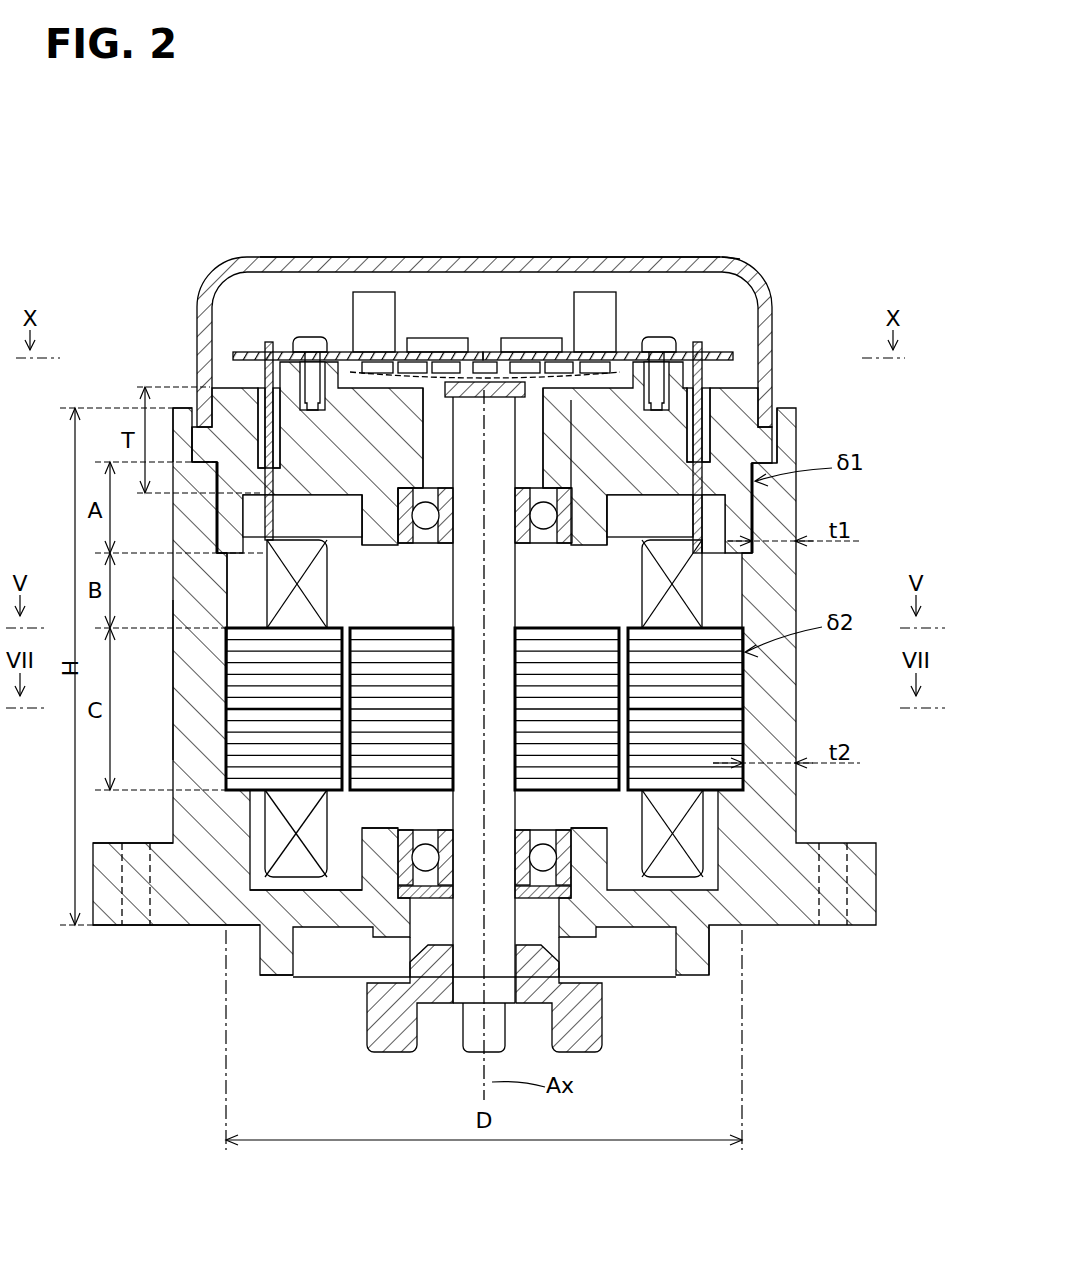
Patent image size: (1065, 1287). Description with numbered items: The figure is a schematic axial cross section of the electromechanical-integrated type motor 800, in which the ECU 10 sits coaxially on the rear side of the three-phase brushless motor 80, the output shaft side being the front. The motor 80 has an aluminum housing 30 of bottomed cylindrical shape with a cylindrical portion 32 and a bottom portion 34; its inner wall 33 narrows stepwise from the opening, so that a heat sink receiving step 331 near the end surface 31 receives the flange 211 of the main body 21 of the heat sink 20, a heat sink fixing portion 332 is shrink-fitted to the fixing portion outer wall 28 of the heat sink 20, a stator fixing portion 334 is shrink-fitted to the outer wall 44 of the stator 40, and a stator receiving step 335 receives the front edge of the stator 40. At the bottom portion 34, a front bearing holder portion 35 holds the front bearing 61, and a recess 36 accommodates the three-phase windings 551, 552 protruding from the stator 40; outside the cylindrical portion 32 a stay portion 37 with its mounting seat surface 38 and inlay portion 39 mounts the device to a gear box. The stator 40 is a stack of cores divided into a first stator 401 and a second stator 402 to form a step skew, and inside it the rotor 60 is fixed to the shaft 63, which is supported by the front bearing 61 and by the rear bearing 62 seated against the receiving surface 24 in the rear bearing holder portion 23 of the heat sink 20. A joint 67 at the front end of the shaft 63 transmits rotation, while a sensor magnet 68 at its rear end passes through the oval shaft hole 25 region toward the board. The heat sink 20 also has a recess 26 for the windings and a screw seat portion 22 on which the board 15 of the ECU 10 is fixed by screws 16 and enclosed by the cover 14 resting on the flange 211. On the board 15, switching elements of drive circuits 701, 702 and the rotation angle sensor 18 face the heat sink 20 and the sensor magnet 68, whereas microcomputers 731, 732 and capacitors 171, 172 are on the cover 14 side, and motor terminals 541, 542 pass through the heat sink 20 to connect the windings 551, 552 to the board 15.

The electromechanical-integrated type motor 800 is at (746, 247).
The ECU 10 is at (716, 331).
The cover 14 is at (320, 257).
The board 15 is at (266, 350).
The screws 16 is at (311, 340).
The rotation angle sensor 18 is at (485, 364).
The heat sink 20 is at (737, 410).
The main body 21 is at (613, 452).
The screw seat portion 22 is at (669, 374).
The rear bearing holder portion 23 is at (378, 520).
The receiving surface 24 is at (420, 536).
The shaft hole 25 is at (424, 476).
The recess 26 is at (322, 504).
The fixing portion outer wall 28 is at (754, 526).
The housing 30 is at (762, 821).
The end surface 31 is at (198, 400).
The cylindrical portion 32 is at (203, 655).
The inner wall 33 is at (240, 543).
The bottom portion 34 is at (335, 905).
The front bearing holder portion 35 is at (374, 840).
The recess 36 is at (285, 882).
The stay portion 37 is at (110, 862).
The mounting seat surface 38 is at (114, 927).
The inlay portion 39 is at (280, 968).
The stator 40 is at (557, 709).
The outer wall 44 is at (238, 690).
The rotor 60 is at (590, 650).
The front bearing 61 is at (546, 845).
The rear bearing 62 is at (548, 532).
The shaft 63 is at (500, 606).
The joint 67 is at (603, 1032).
The sensor magnet 68 is at (500, 382).
The motor 80 is at (771, 965).
The capacitor 171 is at (372, 292).
The capacitor 172 is at (595, 292).
The flange 211 is at (759, 446).
The heat sink receiving step 331 is at (188, 442).
The heat sink fixing portion 332 is at (208, 445).
The stator fixing portion 334 is at (240, 622).
The stator receiving step 335 is at (218, 762).
The first stator 401 is at (700, 678).
The second stator 402 is at (694, 727).
The motor terminal 541 is at (268, 344).
The motor terminal 542 is at (697, 344).
The three-phase winding 551 is at (322, 600).
The three-phase winding 552 is at (690, 606).
The drive circuit 701 is at (405, 360).
The drive circuit 702 is at (565, 360).
The microcomputer 731 is at (445, 340).
The microcomputer 732 is at (530, 340).